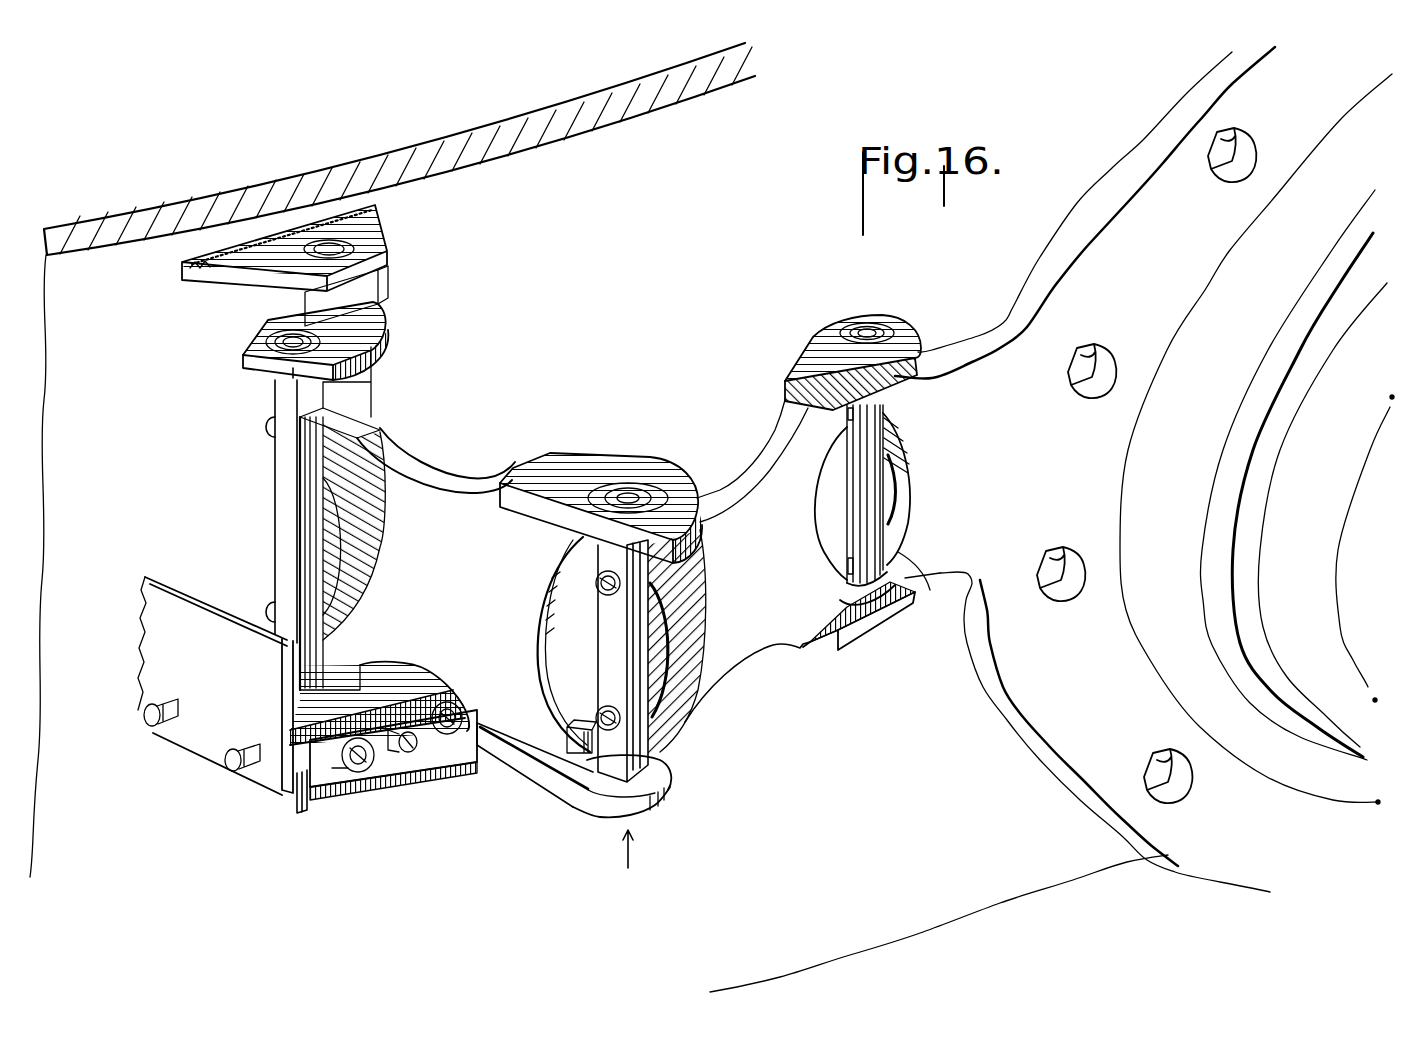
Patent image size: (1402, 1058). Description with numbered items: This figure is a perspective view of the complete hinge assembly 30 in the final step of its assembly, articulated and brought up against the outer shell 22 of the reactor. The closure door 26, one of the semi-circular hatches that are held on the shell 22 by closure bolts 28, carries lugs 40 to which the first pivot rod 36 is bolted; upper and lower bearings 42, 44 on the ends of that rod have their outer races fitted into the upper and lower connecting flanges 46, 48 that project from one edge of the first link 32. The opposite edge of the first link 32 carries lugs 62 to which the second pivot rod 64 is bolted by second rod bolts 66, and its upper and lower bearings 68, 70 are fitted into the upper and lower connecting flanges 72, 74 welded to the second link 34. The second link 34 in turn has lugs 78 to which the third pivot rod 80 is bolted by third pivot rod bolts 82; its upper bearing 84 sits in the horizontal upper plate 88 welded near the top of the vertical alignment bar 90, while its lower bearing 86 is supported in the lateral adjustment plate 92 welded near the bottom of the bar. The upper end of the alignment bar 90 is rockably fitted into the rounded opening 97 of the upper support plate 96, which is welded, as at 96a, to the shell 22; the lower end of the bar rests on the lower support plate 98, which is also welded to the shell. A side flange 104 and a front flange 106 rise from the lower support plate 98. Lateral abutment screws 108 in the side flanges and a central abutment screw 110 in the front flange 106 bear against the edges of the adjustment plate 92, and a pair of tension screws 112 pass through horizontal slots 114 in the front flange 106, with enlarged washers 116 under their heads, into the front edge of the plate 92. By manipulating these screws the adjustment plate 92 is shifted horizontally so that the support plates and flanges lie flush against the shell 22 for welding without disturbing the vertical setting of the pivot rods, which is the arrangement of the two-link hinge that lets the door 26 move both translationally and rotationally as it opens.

The outer shell 22 is at (488, 136).
The closure doors 26 is at (1112, 175).
The closure bolts 28 is at (1086, 400).
The hinge assemblies 30 is at (628, 862).
The first link 32 is at (773, 640).
The second link 34 is at (445, 470).
The first pivot rod 36 is at (884, 468).
The lugs 40 is at (900, 398).
The upper bearing 42 is at (880, 330).
The lower bearing 44 is at (880, 618).
The upper connecting flange 46 is at (812, 357).
The lower connecting flange 48 is at (838, 650).
The lugs 62 is at (665, 552).
The second pivot rod 64 is at (604, 635).
The second rod bolts 66 is at (596, 583).
The upper bearing 68 is at (630, 492).
The lower bearing 70 is at (600, 790).
The upper connecting flange 72 is at (575, 463).
The lower connecting flange 74 is at (555, 780).
The lugs 78 is at (350, 430).
The third pivot rod 80 is at (286, 537).
The third pivot rod bolts 82 is at (270, 430).
The upper bearing 84 is at (276, 336).
The lower bearing 86 is at (327, 676).
The upper plate 88 is at (366, 334).
The vertical alignment bar 90 is at (358, 370).
The lateral adjustment plate 92 is at (405, 676).
The upper support plate 96 is at (372, 244).
The weld 96a is at (182, 270).
The opening 97 is at (346, 243).
The lower support plate 98 is at (297, 806).
The side flange 104 is at (331, 772).
The front flange 106 is at (188, 592).
The lateral abutment screws 108 is at (228, 766).
The central abutment screw 110 is at (408, 754).
The tension screws 112 is at (362, 774).
The slots 114 is at (350, 775).
The enlarged washers 116 is at (370, 691).